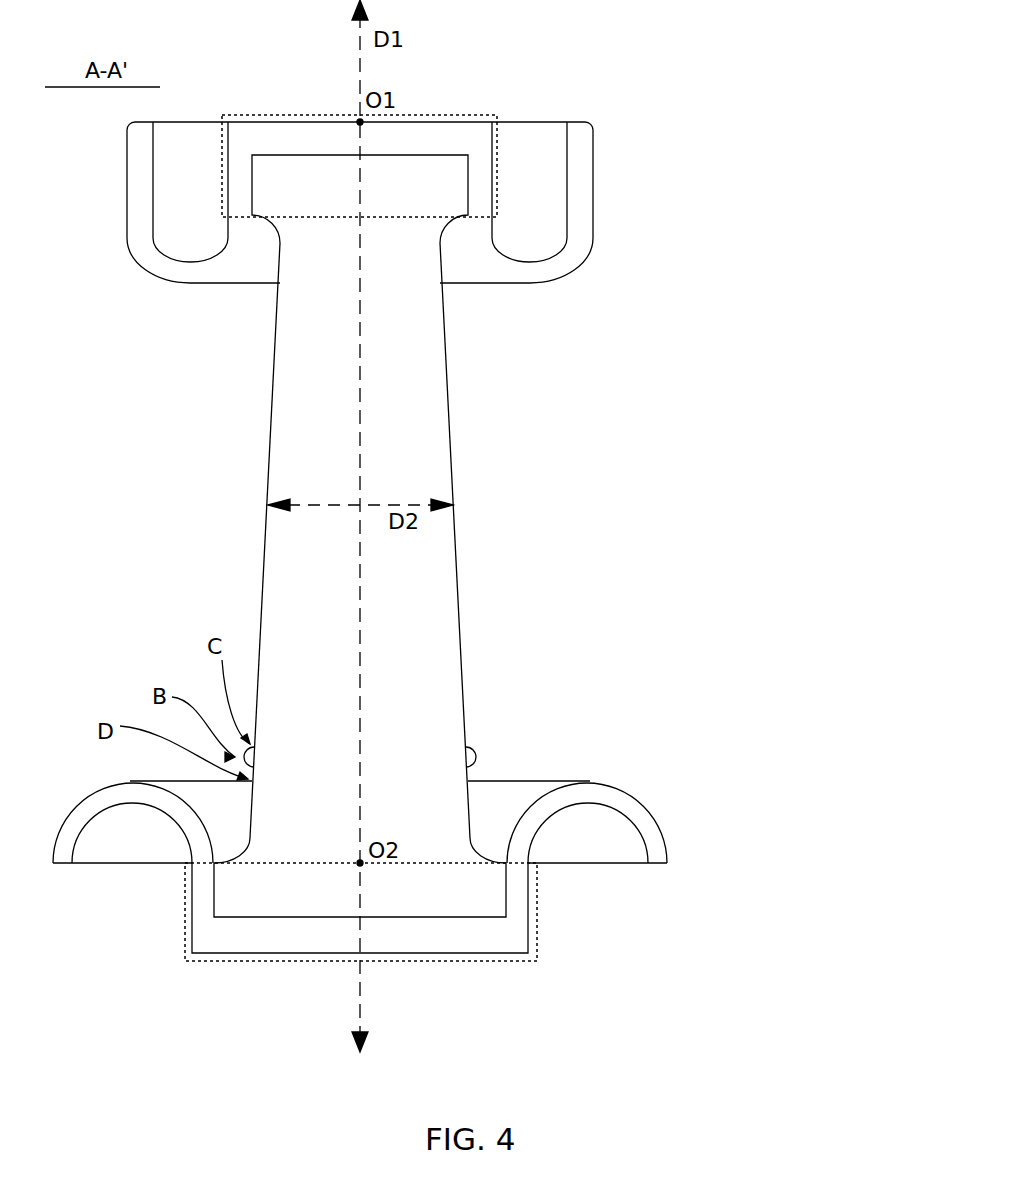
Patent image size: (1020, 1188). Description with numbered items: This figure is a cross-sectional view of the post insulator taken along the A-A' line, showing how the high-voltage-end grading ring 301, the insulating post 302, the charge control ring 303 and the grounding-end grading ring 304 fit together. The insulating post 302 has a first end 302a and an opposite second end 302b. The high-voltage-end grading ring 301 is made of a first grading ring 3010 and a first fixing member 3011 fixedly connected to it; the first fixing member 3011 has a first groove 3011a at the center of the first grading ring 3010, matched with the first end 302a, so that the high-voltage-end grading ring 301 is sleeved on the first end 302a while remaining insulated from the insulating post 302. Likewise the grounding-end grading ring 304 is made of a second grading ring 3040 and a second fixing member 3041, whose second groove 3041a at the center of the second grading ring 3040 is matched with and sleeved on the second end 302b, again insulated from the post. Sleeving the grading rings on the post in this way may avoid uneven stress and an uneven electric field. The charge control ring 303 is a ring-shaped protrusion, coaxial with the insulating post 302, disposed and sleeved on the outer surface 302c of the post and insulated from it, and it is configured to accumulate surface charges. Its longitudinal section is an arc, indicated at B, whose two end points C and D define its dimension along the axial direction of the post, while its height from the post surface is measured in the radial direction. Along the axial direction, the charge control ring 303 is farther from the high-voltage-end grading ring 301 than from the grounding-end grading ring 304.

The high-voltage-end grading ring 301 is at (516, 200).
The first grading ring 3010 is at (577, 187).
The first fixing member 3011 is at (495, 200).
The first groove 3011a is at (435, 115).
The insulating post 302 is at (377, 543).
The first end 302a is at (322, 190).
The second end 302b is at (283, 892).
The outer surface 302c is at (448, 572).
The charge control ring 303 is at (477, 760).
The grounding-end grading ring 304 is at (481, 883).
The second grading ring 3040 is at (645, 827).
The second fixing member 3041 is at (438, 883).
The second groove 3041a is at (537, 957).